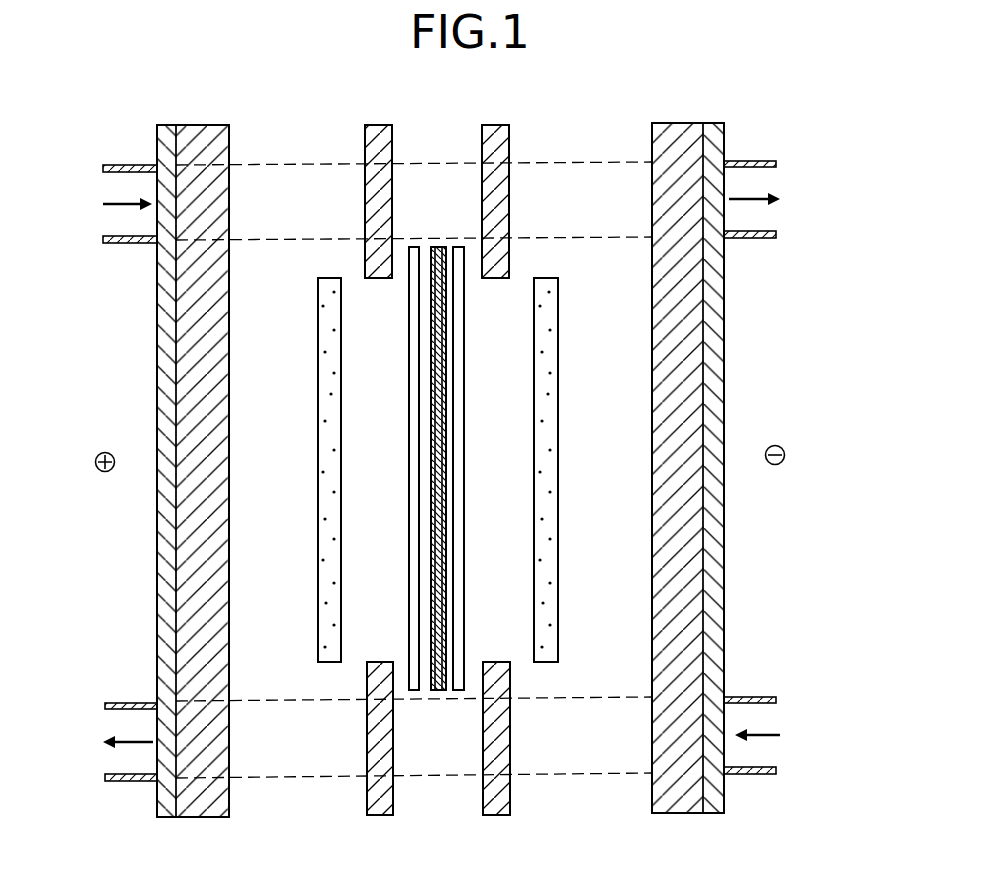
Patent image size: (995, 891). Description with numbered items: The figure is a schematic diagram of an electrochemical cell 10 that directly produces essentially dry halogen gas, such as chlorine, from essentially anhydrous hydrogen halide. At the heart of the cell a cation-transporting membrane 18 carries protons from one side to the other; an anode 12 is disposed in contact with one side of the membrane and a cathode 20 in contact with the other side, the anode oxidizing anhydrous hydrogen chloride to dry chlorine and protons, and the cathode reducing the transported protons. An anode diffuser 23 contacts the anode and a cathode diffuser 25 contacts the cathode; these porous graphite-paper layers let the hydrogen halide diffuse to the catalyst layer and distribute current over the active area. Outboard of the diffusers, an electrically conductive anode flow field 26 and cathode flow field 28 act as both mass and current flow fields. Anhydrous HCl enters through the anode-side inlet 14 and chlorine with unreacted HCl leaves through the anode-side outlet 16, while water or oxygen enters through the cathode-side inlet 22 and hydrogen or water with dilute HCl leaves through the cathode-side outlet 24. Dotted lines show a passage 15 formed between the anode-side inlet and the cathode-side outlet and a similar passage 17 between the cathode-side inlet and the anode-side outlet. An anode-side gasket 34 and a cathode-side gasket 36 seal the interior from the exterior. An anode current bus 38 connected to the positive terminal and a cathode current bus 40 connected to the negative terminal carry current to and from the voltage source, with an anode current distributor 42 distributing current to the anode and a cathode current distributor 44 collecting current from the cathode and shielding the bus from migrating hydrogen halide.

The electrochemical cell 10 is at (169, 44).
The anode 12 is at (131, 165).
The anode-side inlet 14 is at (431, 247).
The passage 15 is at (262, 163).
The anode-side outlet 16 is at (130, 703).
The passage 17 is at (257, 778).
The cation-transporting membrane 18 is at (438, 690).
The cathode 20 is at (446, 247).
The cathode-side inlet 22 is at (757, 697).
The anode diffuser 23 is at (410, 380).
The cathode-side outlet 24 is at (745, 161).
The cathode diffuser 25 is at (466, 380).
The anode flow field 26 is at (318, 564).
The cathode flow field 28 is at (557, 563).
The anode-side gasket 34 is at (376, 125).
The cathode-side gasket 36 is at (500, 125).
The anode current bus 38 is at (166, 817).
The cathode current bus 40 is at (712, 812).
The anode current distributor 42 is at (201, 817).
The cathode current distributor 44 is at (676, 812).